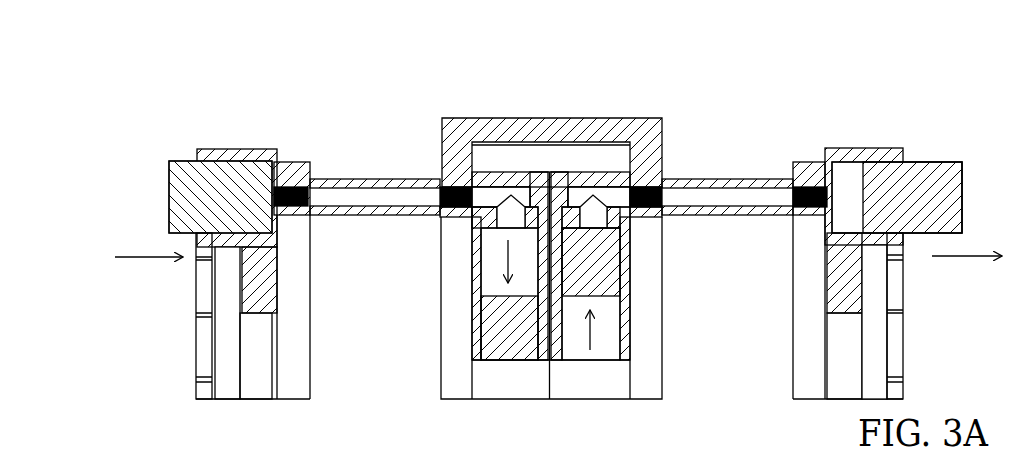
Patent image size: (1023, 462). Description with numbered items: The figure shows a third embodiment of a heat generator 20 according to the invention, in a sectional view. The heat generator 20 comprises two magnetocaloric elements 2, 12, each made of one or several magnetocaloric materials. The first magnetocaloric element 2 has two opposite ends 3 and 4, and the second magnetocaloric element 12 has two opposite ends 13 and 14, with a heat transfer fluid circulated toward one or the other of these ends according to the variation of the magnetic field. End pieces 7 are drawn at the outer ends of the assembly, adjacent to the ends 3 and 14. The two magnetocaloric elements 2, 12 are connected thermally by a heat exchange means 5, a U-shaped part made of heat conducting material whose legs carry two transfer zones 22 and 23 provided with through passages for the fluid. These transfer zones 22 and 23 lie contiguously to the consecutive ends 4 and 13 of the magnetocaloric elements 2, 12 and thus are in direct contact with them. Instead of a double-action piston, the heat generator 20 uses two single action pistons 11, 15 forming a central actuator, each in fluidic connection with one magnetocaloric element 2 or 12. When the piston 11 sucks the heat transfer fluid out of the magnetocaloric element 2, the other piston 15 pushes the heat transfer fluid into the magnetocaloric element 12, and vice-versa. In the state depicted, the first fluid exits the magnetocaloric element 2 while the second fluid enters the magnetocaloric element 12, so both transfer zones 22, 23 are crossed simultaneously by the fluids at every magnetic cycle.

The heat generator 20 is at (78, 138).
The end block 7 is at (187, 178).
The end of magnetocaloric element 3 is at (312, 197).
The magnetocaloric element 2 is at (370, 197).
The end of magnetocaloric element 4 is at (438, 197).
The heat exchange means 5 is at (675, 150).
The end of magnetocaloric element 13 is at (662, 200).
The magnetocaloric element 12 is at (745, 197).
The end of magnetocaloric element 14 is at (787, 197).
The single action piston 11 is at (515, 350).
The single action piston 15 is at (602, 287).
The transfer zone 22 is at (455, 250).
The transfer zone 23 is at (645, 250).